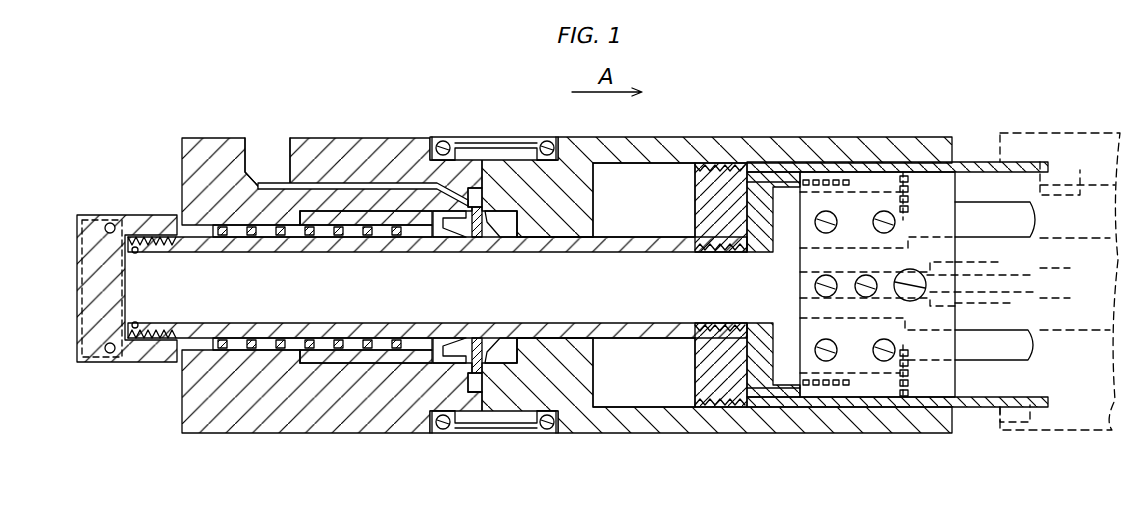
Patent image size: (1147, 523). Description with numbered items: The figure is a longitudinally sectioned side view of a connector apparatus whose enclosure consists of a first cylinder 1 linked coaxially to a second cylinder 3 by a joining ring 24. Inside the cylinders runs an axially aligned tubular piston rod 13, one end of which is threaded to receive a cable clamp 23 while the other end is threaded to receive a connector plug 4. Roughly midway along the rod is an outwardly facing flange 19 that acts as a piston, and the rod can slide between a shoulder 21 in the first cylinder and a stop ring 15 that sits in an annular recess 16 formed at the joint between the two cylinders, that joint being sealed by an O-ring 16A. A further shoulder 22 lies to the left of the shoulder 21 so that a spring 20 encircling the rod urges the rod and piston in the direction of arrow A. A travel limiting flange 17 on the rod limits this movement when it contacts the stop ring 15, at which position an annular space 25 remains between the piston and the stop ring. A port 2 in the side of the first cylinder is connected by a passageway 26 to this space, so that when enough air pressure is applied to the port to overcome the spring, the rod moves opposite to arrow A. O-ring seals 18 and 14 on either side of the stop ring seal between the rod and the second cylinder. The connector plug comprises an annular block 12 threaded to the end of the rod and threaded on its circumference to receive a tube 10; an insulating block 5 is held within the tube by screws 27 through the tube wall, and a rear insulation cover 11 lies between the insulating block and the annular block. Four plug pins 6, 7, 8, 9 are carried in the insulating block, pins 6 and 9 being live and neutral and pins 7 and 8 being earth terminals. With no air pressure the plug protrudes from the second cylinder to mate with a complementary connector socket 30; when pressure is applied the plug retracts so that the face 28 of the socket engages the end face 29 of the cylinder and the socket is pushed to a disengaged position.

The first cylinder 1 is at (213, 142).
The port 2 is at (264, 150).
The second cylinder 3 is at (732, 140).
The connector plug 4 is at (971, 419).
The insulating block 5 is at (948, 190).
The plug pin 6 is at (1040, 220).
The plug pin 7 is at (1056, 270).
The plug pin 8 is at (1050, 292).
The plug pin 9 is at (992, 352).
The tube 10 is at (1005, 418).
The rear insulation cover 11 is at (760, 257).
The annular block 12 is at (678, 372).
The piston rod 13 is at (632, 262).
The O-ring seal 14 is at (528, 240).
The stop ring 15 is at (500, 240).
The annular recess 16 is at (468, 385).
The O-ring 16A is at (480, 396).
The travel limiting flange 17 is at (478, 240).
The O-ring seal 18 is at (440, 240).
The outwardly facing flange 19 is at (384, 228).
The spring 20 is at (340, 226).
The shoulder 21 is at (290, 253).
The further shoulder 22 is at (218, 240).
The cable clamp 23 is at (102, 380).
The joining ring 24 is at (485, 136).
The annular space 25 is at (470, 224).
The passageway 26 is at (360, 186).
The screws 27 is at (900, 170).
The face 28 is at (1000, 152).
The end face 29 is at (950, 168).
The complementary connector socket 30 is at (1066, 116).